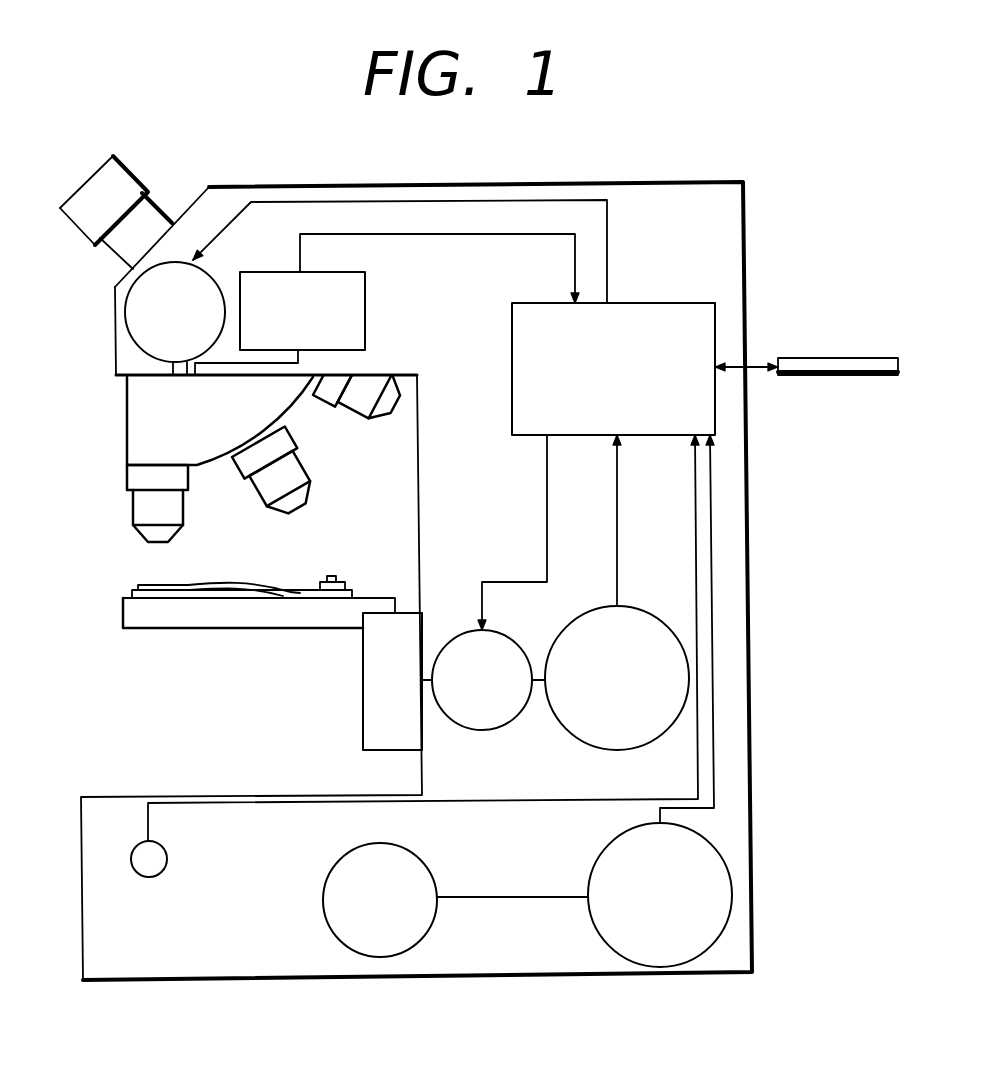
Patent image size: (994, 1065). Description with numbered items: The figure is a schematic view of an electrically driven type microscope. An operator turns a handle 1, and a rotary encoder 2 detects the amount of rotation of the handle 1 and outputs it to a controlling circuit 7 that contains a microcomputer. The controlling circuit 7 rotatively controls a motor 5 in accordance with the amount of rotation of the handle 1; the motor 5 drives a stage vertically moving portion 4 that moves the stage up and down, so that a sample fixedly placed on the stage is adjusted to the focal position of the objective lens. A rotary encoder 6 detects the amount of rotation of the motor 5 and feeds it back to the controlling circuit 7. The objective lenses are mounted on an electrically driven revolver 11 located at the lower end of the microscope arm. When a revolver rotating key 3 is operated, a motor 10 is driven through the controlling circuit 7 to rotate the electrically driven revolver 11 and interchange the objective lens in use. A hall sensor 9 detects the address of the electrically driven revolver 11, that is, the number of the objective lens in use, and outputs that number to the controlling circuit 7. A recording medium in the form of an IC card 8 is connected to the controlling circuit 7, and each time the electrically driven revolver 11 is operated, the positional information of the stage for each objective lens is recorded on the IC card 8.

The handle 1 is at (390, 958).
The rotary encoder 2 is at (733, 880).
The revolver rotating key 3 is at (132, 852).
The stage vertically moving portion 4 is at (363, 652).
The motor 5 is at (507, 727).
The rotary encoder 6 is at (662, 737).
The controlling circuit 7 is at (693, 303).
The IC card 8 is at (868, 357).
The hall sensor 9 is at (368, 290).
The motor 10 is at (125, 313).
The electrically driven revolver 11 is at (135, 432).